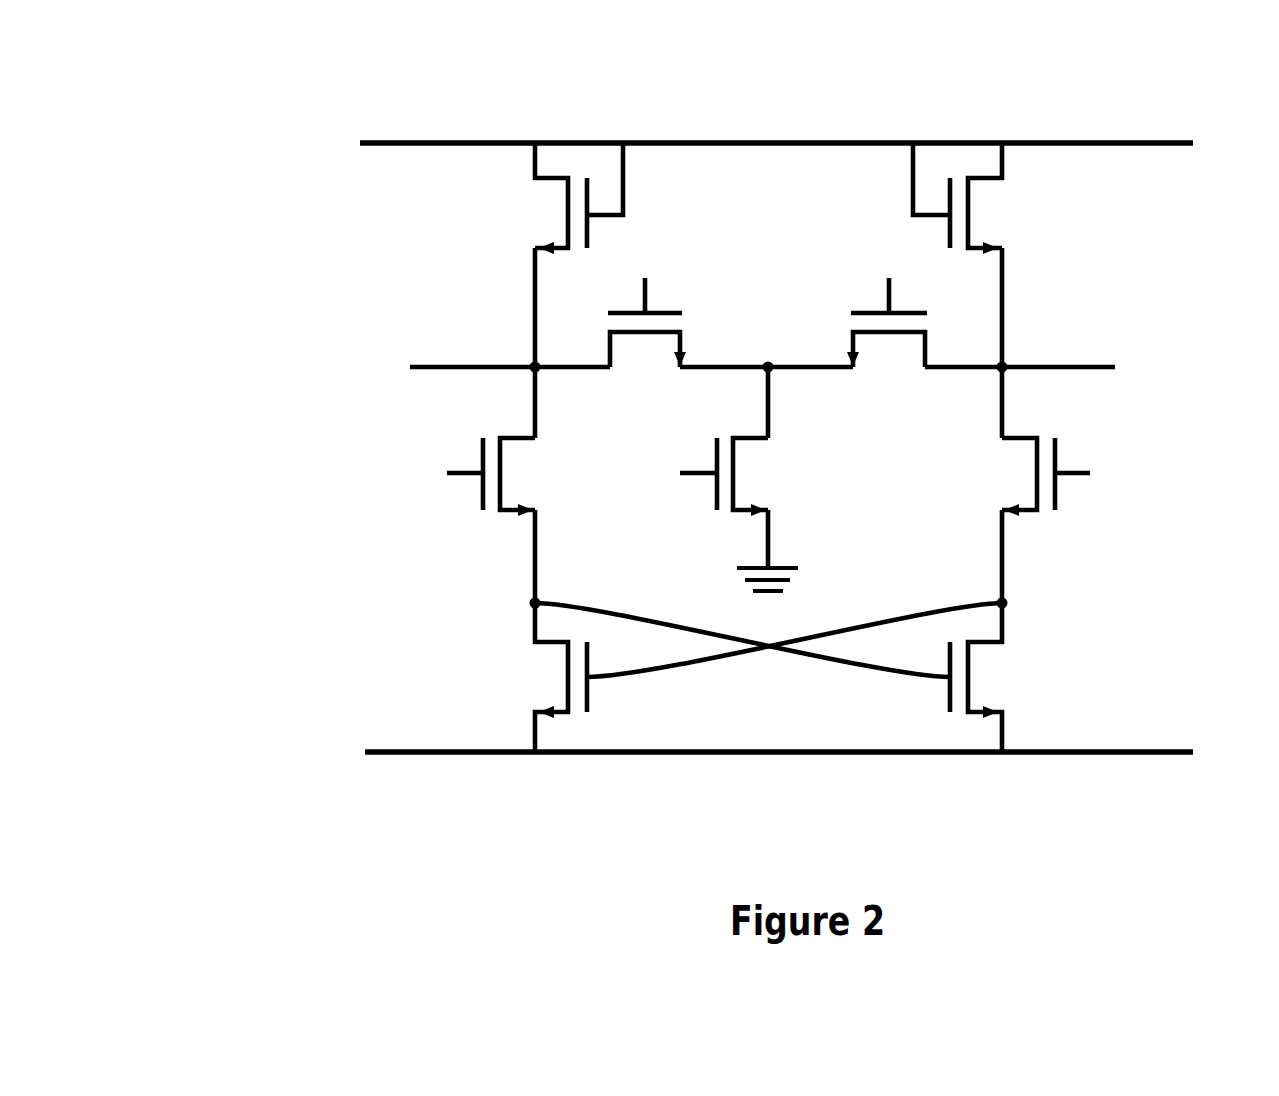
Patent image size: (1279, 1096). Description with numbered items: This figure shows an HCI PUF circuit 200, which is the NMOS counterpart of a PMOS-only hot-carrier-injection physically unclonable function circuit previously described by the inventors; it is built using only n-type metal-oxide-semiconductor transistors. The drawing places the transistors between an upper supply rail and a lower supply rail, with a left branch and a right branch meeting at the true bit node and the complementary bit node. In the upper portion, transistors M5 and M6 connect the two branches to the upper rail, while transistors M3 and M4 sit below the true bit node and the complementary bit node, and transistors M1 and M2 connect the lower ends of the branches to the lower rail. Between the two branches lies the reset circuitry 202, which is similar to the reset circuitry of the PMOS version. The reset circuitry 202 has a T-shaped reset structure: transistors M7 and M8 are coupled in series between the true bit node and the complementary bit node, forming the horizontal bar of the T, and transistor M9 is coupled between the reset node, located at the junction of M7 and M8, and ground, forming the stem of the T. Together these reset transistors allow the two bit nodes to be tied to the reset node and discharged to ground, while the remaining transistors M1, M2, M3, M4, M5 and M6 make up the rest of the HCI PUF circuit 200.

The HCI PUF circuit 200 is at (290, 115).
The reset circuitry 202 is at (852, 480).
The transistor M1 is at (546, 677).
The transistor M2 is at (985, 677).
The transistor M3 is at (498, 477).
The transistor M4 is at (1034, 477).
The transistor M5 is at (564, 198).
The transistor M6 is at (968, 198).
The transistor M7 is at (647, 334).
The transistor M8 is at (887, 334).
The transistor M9 is at (736, 477).